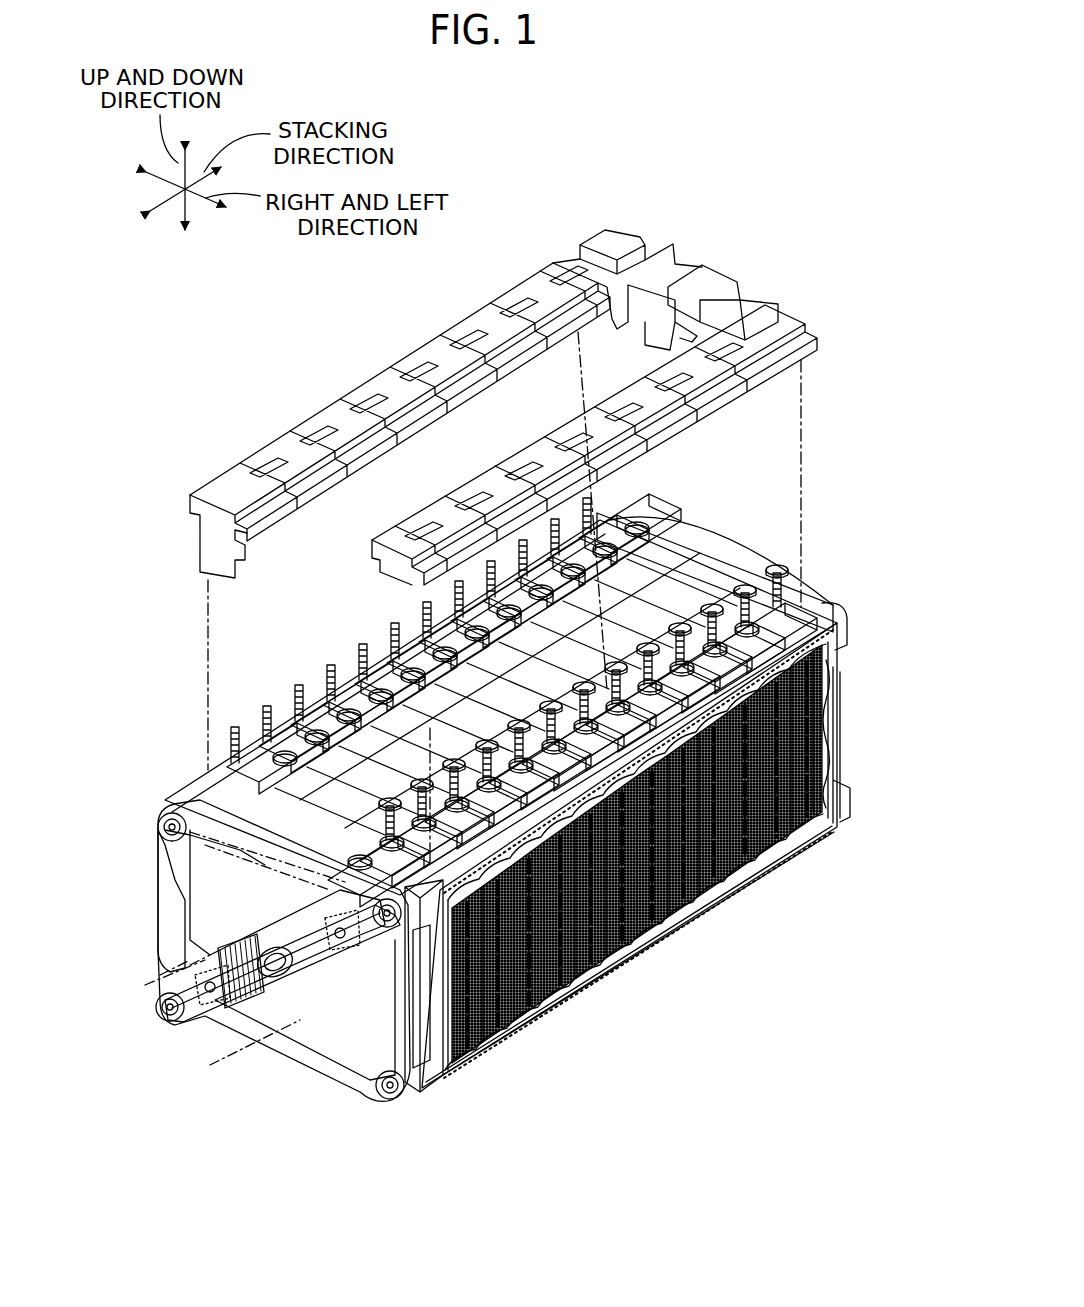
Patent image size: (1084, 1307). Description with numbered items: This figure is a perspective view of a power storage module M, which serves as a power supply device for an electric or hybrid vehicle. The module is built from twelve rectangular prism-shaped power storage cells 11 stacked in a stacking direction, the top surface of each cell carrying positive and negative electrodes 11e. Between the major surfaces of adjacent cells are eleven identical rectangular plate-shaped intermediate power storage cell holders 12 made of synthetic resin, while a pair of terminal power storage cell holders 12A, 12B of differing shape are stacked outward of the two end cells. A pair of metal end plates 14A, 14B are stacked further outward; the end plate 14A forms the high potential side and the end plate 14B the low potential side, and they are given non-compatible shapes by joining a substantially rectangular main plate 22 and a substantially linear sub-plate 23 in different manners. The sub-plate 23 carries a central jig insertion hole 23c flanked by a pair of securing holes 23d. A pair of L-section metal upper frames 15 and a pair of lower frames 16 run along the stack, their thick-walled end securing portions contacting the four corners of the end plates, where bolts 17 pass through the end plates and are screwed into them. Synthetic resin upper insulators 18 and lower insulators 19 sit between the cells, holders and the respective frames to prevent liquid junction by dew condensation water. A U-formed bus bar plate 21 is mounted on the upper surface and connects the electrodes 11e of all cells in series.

The power storage module M is at (220, 420).
The bus bar plate 21 is at (407, 353).
The end plate 14B is at (700, 565).
The end plate 14A is at (277, 1053).
The electrode 11e is at (234, 750).
The power storage cell 11 is at (383, 747).
The upper insulator 18 is at (663, 720).
The upper frame 15 is at (587, 770).
The terminal power storage cell holder 12B is at (843, 725).
The terminal power storage cell holder 12A is at (432, 1010).
The intermediate power storage cell holder 12 is at (582, 945).
The bolt 17 is at (158, 828).
The main plate 22 is at (210, 902).
The sub-plate 23 is at (293, 1000).
The jig insertion hole 23c is at (258, 958).
The securing hole 23d is at (340, 940).
The lower insulator 19 is at (773, 860).
The lower frame 16 is at (670, 927).